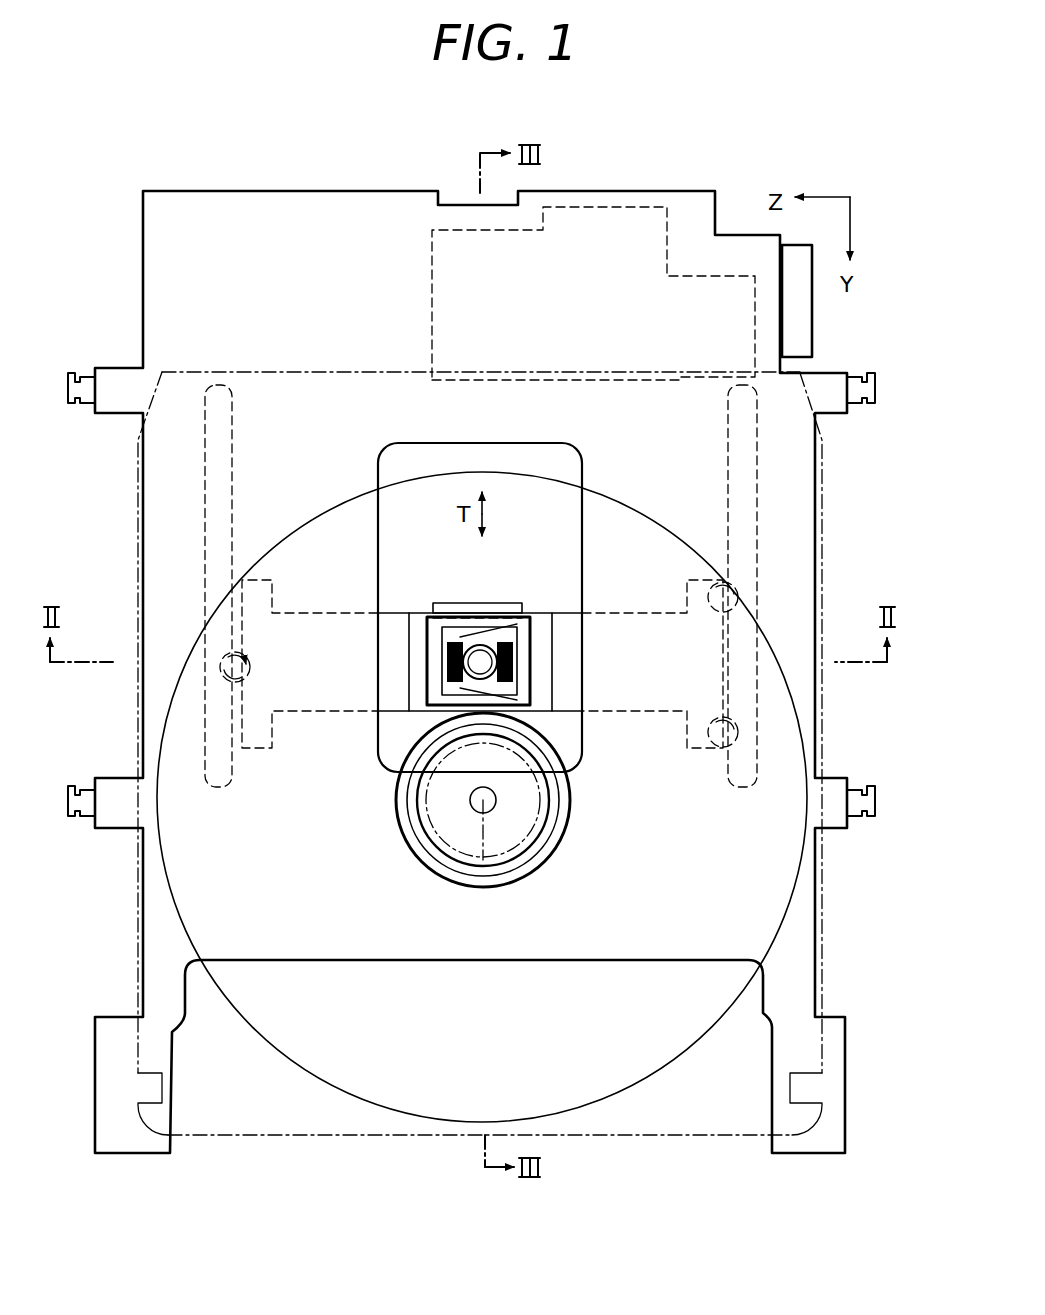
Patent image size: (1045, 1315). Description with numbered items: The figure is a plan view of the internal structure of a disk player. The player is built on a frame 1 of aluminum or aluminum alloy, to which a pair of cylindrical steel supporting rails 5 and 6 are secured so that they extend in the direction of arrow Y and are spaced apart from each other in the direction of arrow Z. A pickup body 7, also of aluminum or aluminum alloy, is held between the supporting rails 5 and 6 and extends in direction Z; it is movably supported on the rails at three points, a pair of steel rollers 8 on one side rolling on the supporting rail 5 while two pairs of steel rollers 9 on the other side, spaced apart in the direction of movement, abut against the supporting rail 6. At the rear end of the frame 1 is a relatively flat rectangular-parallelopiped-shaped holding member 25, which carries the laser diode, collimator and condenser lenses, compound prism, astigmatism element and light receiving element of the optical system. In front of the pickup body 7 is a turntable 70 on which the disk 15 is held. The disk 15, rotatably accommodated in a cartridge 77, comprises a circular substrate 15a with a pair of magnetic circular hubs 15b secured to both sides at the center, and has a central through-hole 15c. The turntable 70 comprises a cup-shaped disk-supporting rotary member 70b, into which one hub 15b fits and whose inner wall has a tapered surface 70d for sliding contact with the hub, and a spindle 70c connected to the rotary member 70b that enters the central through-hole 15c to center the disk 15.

The frame 1 is at (139, 294).
The cartridge 77 is at (178, 362).
The holding member 25 is at (758, 313).
The supporting rail 5 is at (205, 452).
The supporting rail 6 is at (757, 445).
The rollers 8 is at (221, 660).
The rollers 9 is at (740, 590).
The pickup body 7 is at (535, 606).
The turntable 70 is at (487, 824).
The cup-shaped disk-supporting rotary member 70b is at (570, 787).
The spindle 70c is at (470, 803).
The tapered surface 70d is at (555, 808).
The disk 15 is at (791, 908).
The circular substrate 15a is at (768, 940).
The circular hubs 15b is at (515, 832).
The central through-hole 15c is at (483, 812).